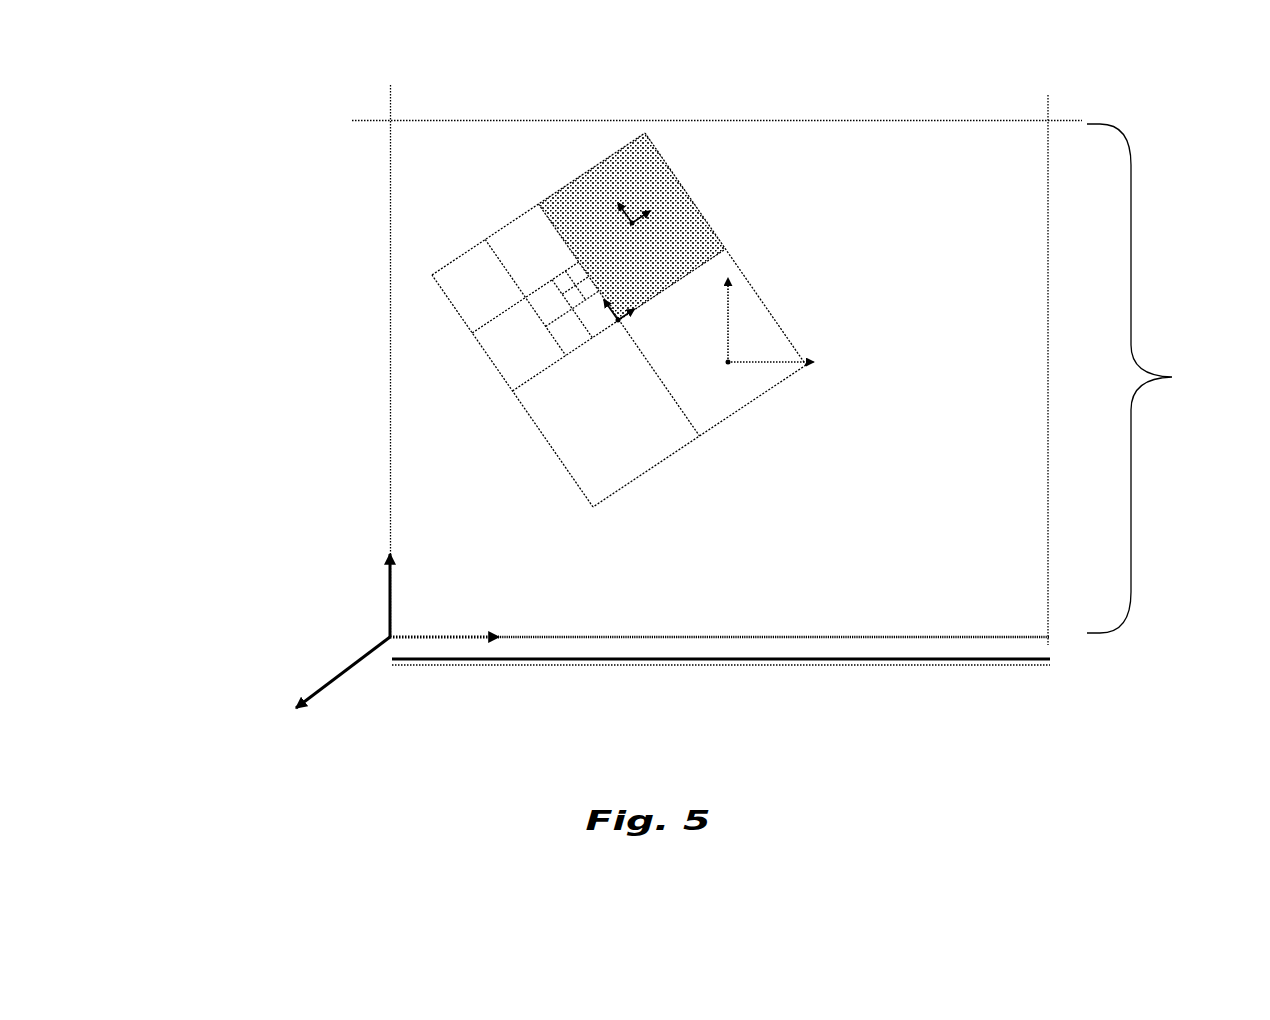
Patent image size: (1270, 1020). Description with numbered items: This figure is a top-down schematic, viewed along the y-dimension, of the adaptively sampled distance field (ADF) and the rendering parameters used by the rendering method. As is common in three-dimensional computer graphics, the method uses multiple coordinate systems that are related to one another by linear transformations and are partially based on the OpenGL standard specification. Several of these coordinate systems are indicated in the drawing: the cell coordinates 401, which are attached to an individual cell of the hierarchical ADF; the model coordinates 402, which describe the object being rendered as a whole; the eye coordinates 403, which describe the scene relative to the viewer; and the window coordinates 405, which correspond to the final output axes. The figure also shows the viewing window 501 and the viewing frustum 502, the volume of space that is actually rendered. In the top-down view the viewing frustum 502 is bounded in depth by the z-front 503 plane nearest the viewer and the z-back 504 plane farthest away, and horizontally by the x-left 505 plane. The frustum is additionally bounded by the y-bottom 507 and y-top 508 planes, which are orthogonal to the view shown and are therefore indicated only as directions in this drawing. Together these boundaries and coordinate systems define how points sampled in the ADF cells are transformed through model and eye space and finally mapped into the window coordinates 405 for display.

The cell coordinates 401 is at (632, 223).
The model coordinates 402 is at (618, 320).
The eye coordinates 403 is at (728, 362).
The window coordinates 405 is at (383, 641).
The viewing window 501 is at (893, 662).
The viewing frustum 502 is at (1169, 378).
The z-front 503 is at (690, 637).
The z-back 504 is at (732, 118).
The x-left 505 is at (390, 448).
The y-bottom 507 is at (387, 630).
The y-top 508 is at (303, 712).